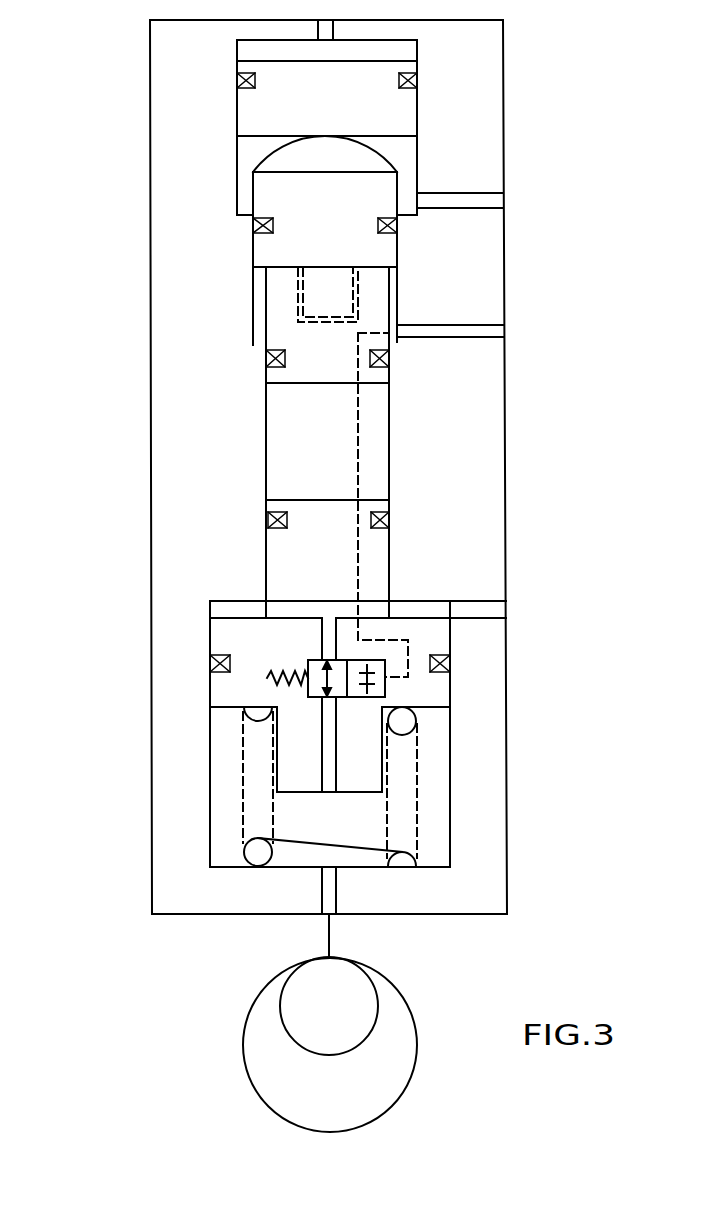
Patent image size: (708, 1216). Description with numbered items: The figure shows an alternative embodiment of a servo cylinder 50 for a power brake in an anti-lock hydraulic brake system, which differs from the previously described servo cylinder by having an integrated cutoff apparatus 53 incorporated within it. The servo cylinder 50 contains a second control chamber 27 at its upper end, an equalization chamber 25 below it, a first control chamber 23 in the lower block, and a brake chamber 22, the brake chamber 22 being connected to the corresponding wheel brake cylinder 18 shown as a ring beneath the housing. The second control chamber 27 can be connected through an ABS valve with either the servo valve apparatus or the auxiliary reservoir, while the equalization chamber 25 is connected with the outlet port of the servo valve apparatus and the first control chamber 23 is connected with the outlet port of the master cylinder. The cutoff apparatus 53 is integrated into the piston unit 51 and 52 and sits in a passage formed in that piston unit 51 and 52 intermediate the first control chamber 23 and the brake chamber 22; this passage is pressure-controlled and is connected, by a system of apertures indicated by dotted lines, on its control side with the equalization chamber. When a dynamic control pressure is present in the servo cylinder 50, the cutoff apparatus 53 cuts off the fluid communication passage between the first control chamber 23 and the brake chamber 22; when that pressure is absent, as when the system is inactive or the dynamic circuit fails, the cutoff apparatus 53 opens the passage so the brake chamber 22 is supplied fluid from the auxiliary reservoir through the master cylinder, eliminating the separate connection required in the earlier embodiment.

The servo cylinder 50 is at (142, 227).
The second control chamber 27 is at (350, 50).
The piston unit 51 is at (350, 105).
The equalization chamber 25 is at (400, 297).
The piston unit 52 is at (330, 465).
The first control chamber 23 is at (233, 612).
The cutoff apparatus 53 is at (402, 690).
The brake chamber 22 is at (243, 822).
The wheel brake cylinder 18 is at (328, 1003).